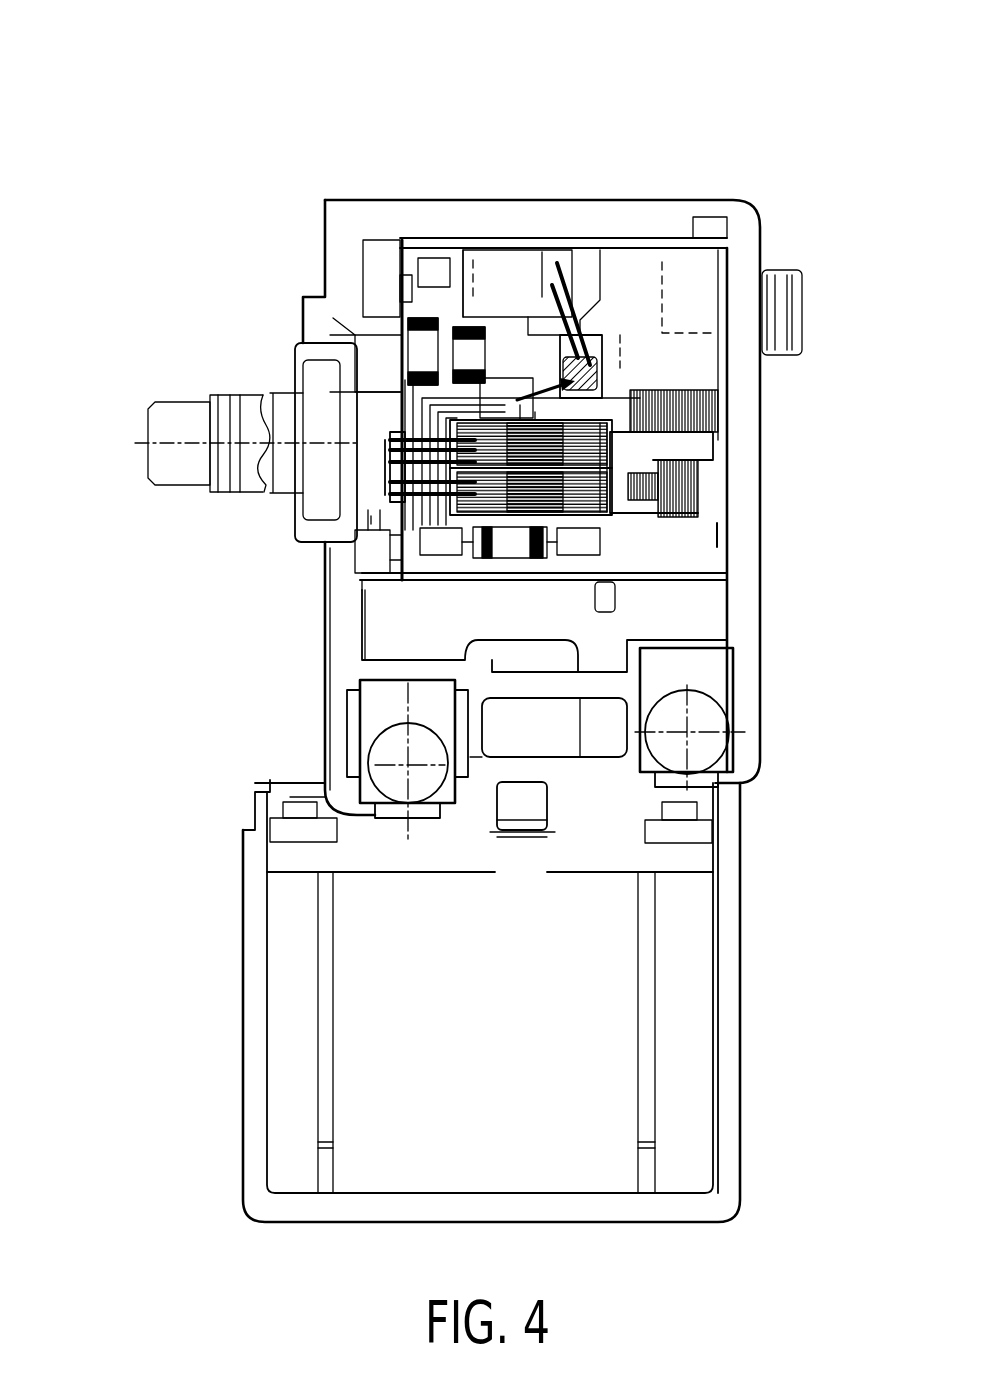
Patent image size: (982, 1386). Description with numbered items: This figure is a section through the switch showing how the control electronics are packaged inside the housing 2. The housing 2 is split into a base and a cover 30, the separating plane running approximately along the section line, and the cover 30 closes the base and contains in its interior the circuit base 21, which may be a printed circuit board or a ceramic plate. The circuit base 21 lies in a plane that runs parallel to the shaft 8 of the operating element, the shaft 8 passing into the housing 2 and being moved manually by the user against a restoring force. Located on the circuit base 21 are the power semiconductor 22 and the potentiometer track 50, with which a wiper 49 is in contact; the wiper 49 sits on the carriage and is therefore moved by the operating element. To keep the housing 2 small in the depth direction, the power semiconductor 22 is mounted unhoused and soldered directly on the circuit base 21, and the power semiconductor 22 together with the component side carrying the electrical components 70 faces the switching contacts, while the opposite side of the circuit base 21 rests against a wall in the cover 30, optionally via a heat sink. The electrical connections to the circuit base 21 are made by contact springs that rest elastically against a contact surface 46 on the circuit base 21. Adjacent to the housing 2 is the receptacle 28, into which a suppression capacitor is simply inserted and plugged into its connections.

The housing 2 is at (569, 217).
The shaft 8 is at (183, 417).
The circuit base 21 is at (673, 540).
The power semiconductor 22 is at (597, 352).
The receptacle 28 is at (727, 957).
The cover 30 is at (677, 215).
The contact surface 46 is at (512, 263).
The wiper 49 is at (400, 485).
The potentiometer track 50 is at (545, 438).
The electrical components 70 is at (468, 355).